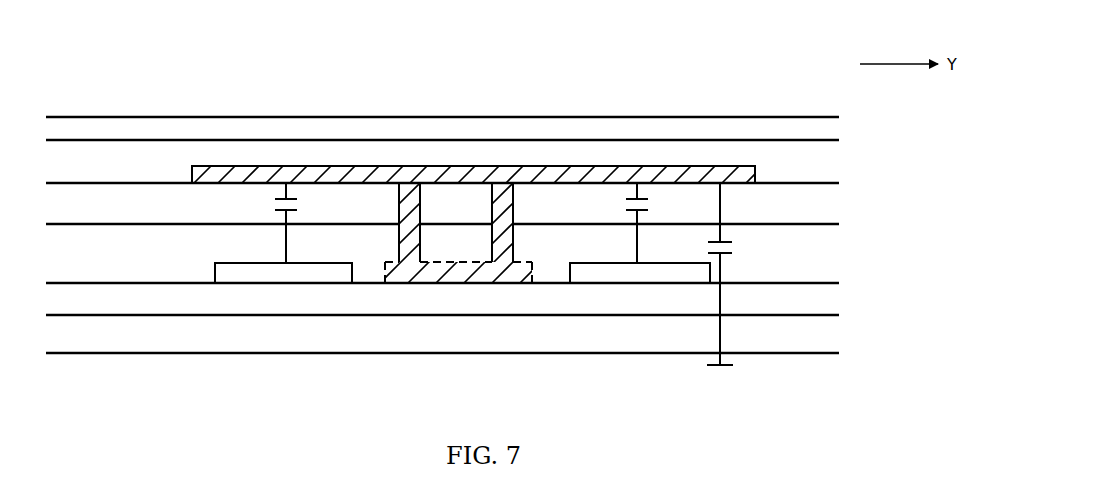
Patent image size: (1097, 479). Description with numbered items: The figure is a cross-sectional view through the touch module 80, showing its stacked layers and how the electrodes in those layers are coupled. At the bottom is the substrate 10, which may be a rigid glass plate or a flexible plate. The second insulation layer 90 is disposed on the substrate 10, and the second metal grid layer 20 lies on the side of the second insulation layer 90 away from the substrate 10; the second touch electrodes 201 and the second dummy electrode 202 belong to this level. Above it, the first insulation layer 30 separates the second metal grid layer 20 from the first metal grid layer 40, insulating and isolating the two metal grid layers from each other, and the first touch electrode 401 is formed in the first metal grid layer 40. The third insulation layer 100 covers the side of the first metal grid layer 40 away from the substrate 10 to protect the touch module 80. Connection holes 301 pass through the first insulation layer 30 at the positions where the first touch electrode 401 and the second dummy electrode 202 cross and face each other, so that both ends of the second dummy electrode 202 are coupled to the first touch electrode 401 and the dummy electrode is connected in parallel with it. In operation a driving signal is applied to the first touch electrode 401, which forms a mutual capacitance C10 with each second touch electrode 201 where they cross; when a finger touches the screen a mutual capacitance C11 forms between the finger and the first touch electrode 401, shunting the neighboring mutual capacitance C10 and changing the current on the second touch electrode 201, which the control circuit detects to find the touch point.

The touch module 80 is at (154, 66).
The third insulation layer 100 is at (822, 131).
The first metal grid layer 40 is at (812, 157).
The first insulation layer 30 is at (818, 213).
The second metal grid layer 20 is at (812, 264).
The second insulation layer 90 is at (828, 302).
The substrate 10 is at (812, 339).
The first touch electrode 401 is at (418, 180).
The connection hole 301 is at (398, 230).
The second dummy electrode 202 is at (443, 270).
The second touch electrode 201 is at (286, 272).
The mutual capacitance C10 is at (481, 223).
The mutual capacitance C11 is at (740, 274).